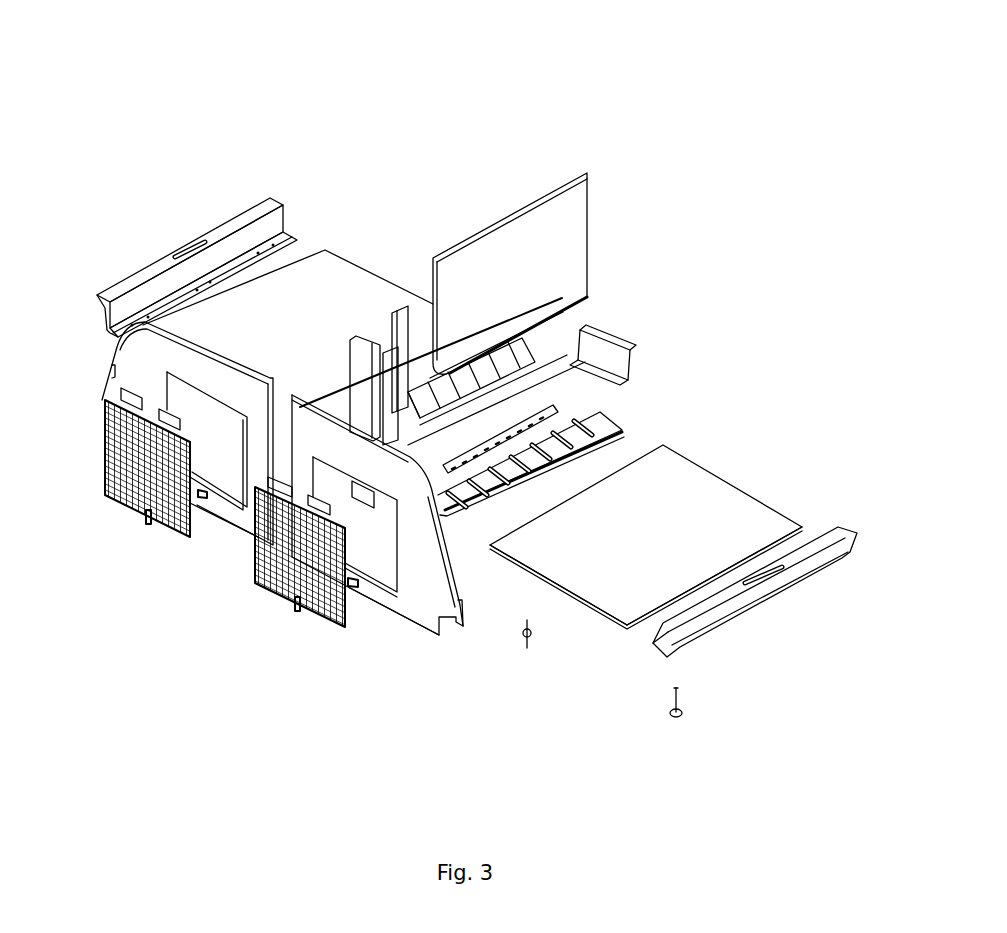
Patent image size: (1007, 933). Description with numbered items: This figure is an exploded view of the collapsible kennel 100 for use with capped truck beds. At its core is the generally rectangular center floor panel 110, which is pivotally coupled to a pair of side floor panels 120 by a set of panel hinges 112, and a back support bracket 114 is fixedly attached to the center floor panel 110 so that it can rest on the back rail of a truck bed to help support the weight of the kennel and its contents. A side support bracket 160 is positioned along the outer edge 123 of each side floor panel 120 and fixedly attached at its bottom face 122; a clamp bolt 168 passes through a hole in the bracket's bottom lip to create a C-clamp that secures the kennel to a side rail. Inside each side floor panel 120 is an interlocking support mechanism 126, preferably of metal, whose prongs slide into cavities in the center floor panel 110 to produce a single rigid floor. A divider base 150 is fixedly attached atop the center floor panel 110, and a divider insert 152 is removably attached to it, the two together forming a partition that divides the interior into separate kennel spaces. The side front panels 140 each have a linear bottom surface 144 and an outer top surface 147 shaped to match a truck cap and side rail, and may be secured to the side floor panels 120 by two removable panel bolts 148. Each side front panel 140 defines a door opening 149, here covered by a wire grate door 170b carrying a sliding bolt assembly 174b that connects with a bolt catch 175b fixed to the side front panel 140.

The collapsible kennel 100 is at (272, 92).
The center floor panel 110 is at (578, 405).
The panel hinges 112 is at (575, 407).
The back support bracket 114 is at (613, 338).
The side floor panels 120 is at (362, 262).
The bottom face 122 is at (570, 594).
The outer edge 123 is at (643, 617).
The interlocking support mechanism 126 is at (443, 518).
The side front panels 140 is at (117, 350).
The bottom surface 144 is at (243, 523).
The outer top surface 147 is at (112, 377).
The panel bolts 148 is at (527, 648).
The door opening 149 is at (197, 407).
The divider base 150 is at (560, 342).
The divider insert 152 is at (547, 194).
The side support bracket 160 is at (133, 263).
The clamp bolt 168 is at (680, 718).
The wire grate door 170b is at (107, 455).
The sliding bolt assembly 174b is at (145, 520).
The bolt catch 175b is at (203, 500).